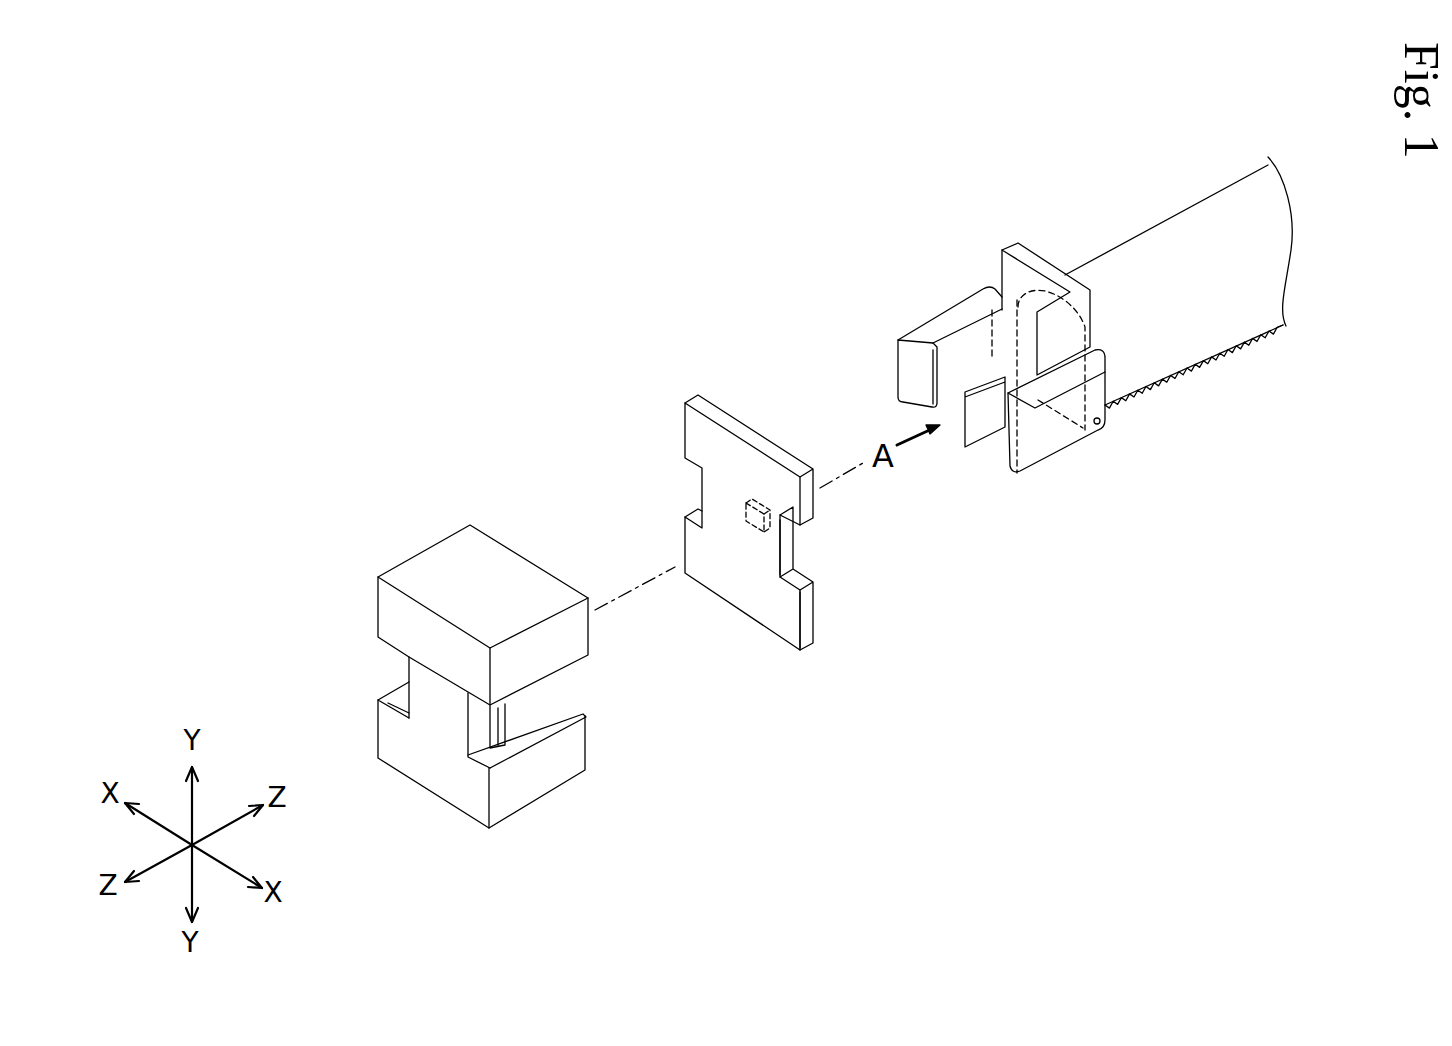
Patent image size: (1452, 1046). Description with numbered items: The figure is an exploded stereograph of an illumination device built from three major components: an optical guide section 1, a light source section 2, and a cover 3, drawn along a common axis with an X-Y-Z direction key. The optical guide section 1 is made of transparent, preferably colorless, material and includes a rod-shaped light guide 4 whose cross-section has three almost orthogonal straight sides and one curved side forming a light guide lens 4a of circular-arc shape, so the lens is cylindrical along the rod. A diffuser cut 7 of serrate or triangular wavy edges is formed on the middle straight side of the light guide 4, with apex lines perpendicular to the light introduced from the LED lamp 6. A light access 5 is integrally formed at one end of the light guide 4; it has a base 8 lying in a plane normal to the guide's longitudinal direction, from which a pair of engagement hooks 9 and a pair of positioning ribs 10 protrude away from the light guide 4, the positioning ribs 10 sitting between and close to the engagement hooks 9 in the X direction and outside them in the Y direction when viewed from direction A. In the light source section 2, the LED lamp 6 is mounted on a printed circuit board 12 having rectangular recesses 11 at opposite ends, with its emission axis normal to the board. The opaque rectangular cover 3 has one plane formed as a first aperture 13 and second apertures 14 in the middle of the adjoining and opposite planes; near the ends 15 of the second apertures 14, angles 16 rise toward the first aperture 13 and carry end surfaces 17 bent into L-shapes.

The optical guide section 1 is at (1050, 202).
The light source section 2 is at (733, 378).
The cover 3 is at (477, 497).
The light guide 4 is at (1135, 218).
The light guide lens 4a is at (1195, 228).
The light access 5 is at (970, 270).
The LED lamp 6 is at (770, 495).
The diffuser cut 7 is at (1193, 372).
The base 8 is at (1017, 332).
The engagement hooks 9 is at (1050, 438).
The positioning ribs 10 is at (1067, 330).
The rectangular recesses 11 is at (802, 548).
The printed circuit board 12 is at (785, 612).
The first aperture 13 is at (533, 592).
The second apertures 14 is at (560, 695).
The ends 15 is at (468, 733).
The angles 16 is at (493, 745).
The end surfaces 17 is at (507, 712).